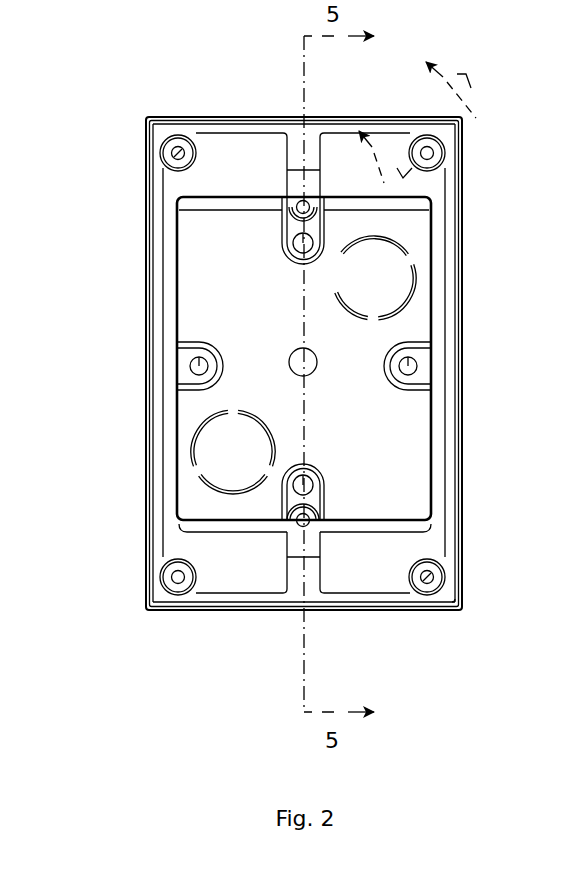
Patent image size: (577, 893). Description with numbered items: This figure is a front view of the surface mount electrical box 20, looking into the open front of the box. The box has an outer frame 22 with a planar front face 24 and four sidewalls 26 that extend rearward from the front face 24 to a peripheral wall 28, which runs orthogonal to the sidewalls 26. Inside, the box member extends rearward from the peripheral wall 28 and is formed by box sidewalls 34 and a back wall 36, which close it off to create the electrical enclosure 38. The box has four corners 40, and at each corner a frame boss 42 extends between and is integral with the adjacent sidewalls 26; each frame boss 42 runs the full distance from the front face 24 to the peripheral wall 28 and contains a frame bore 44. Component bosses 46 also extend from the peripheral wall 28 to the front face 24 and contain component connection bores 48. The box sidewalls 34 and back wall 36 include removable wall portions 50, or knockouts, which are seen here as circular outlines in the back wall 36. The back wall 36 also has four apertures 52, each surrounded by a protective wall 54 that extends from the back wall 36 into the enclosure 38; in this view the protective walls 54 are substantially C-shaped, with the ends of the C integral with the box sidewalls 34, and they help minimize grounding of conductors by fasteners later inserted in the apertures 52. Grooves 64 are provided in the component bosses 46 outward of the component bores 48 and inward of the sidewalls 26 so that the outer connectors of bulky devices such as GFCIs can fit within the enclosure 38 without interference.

The surface mount electrical box 20 is at (120, 128).
The outer frame 22 is at (197, 612).
The front face 24 is at (147, 437).
The sidewalls 26 is at (382, 603).
The peripheral wall 28 is at (436, 272).
The box sidewalls 34 is at (184, 258).
The back wall 36 is at (251, 371).
The electrical enclosure 38 is at (413, 327).
The corners 40 is at (459, 608).
The frame boss 42 is at (187, 159).
The frame bores 44 is at (176, 155).
The component bosses 46 is at (318, 516).
The component connection bores 48 is at (323, 518).
The removable wall portions 50 is at (363, 293).
The apertures 52 is at (300, 249).
The protective wall 54 is at (206, 343).
The grooves 64 is at (293, 541).